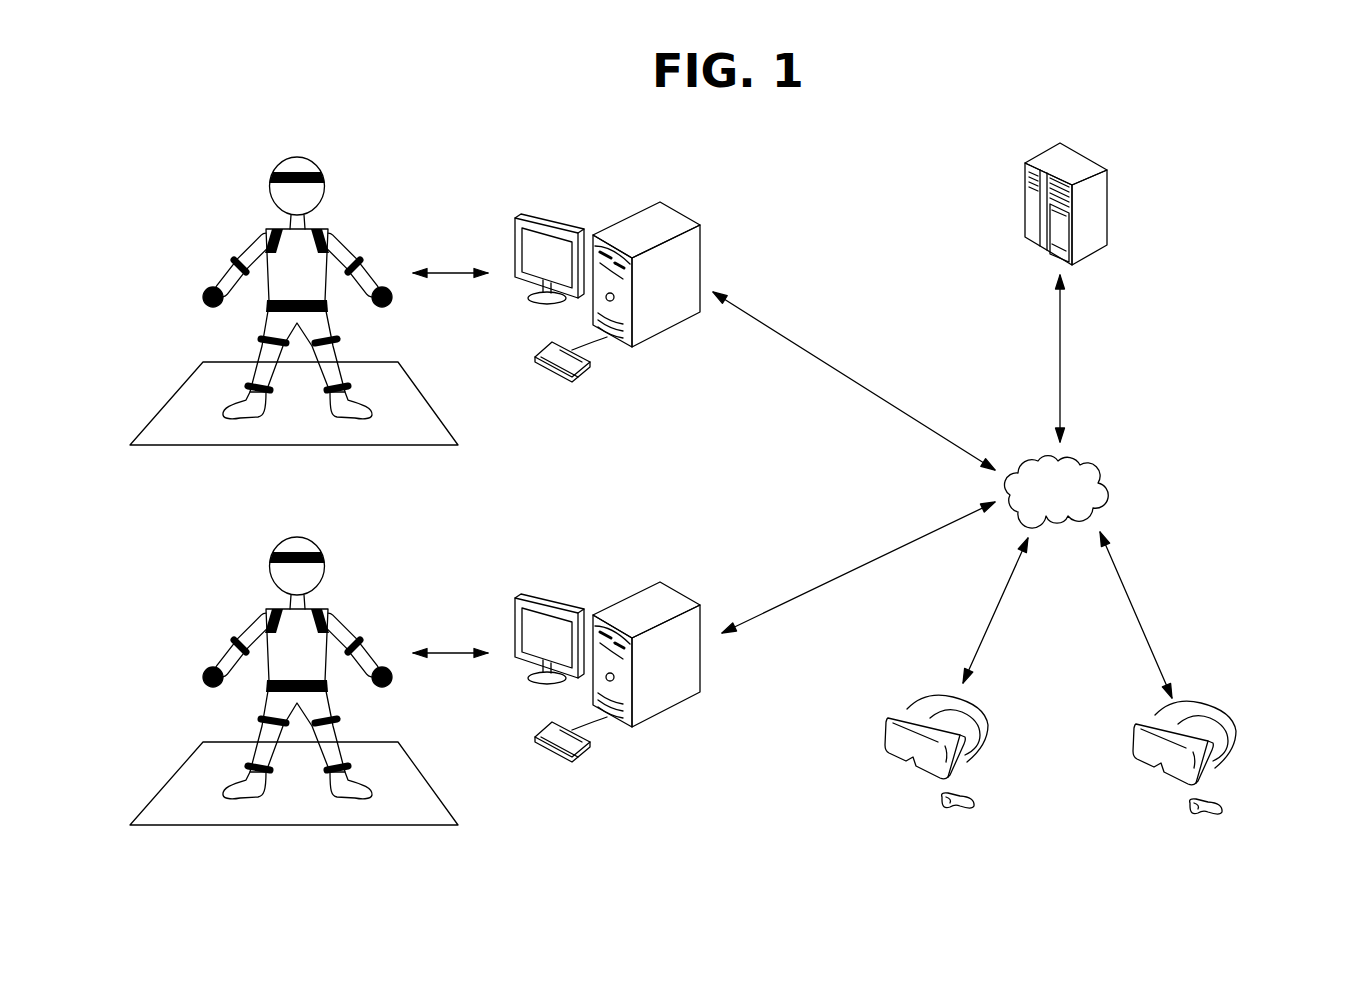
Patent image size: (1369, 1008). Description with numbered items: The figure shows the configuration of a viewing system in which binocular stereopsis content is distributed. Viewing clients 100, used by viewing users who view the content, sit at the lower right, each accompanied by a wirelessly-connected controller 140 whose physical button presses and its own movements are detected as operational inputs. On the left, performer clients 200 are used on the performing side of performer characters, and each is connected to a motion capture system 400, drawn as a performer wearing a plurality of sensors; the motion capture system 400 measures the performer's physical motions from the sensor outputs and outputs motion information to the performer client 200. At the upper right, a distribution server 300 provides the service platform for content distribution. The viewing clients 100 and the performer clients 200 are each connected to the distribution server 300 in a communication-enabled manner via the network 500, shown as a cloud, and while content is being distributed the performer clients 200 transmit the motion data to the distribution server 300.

The viewing client 100 is at (997, 766).
The controller 140 is at (941, 804).
The performer client 200 is at (682, 215).
The distribution server 300 is at (1108, 191).
The motion capture system 400 is at (218, 239).
The network 500 is at (1078, 500).